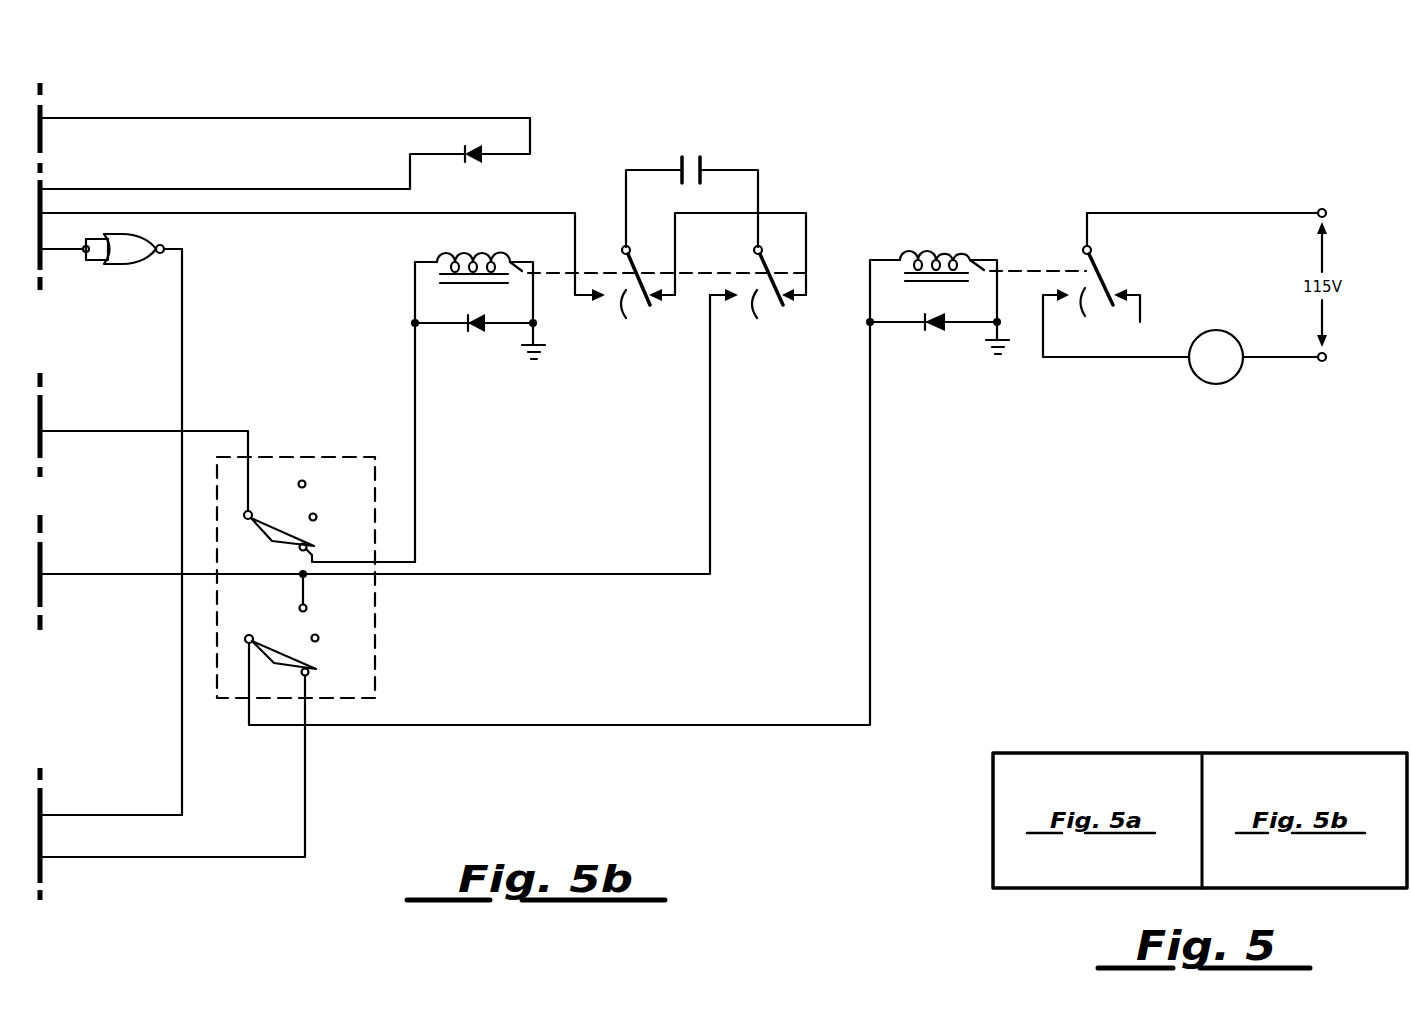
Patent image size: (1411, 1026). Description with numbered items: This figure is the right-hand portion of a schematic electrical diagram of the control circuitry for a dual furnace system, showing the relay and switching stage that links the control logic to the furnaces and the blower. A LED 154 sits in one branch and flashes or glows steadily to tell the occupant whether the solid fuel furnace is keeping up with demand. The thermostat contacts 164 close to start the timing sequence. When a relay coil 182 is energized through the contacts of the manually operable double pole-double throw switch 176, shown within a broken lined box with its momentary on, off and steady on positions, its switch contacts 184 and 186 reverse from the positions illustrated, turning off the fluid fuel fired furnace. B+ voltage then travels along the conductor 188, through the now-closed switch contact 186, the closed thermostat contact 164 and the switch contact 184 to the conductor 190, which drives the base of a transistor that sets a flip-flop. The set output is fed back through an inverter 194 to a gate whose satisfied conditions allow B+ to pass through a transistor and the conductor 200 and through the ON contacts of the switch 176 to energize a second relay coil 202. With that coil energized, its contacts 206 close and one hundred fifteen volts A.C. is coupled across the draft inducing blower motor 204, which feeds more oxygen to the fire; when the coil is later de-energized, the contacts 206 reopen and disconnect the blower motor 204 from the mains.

The LED 154 is at (474, 150).
The thermostat contacts 164 is at (697, 157).
The manually operable double pole-double throw switch 176 is at (302, 457).
The relay coil 182 is at (478, 256).
The switch contact 184 is at (641, 296).
The switch contact 186 is at (746, 296).
The conductor 188 is at (563, 574).
The conductor 190 is at (262, 213).
The inverter 194 is at (124, 265).
The conductor 200 is at (305, 813).
The relay coil 202 is at (920, 249).
The draft inducing blower motor 204 is at (1184, 374).
The contacts 206 is at (1184, 283).